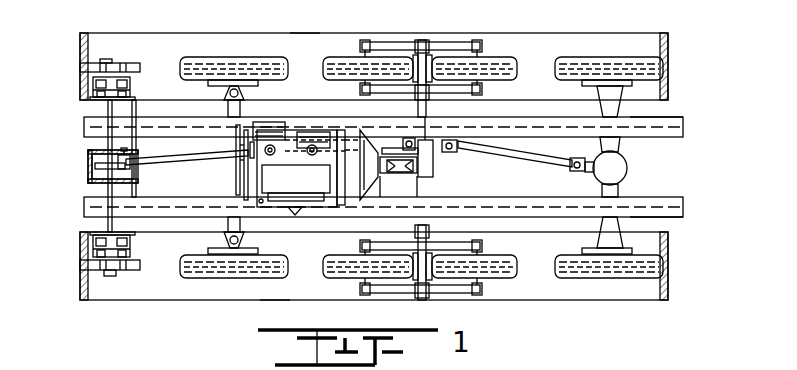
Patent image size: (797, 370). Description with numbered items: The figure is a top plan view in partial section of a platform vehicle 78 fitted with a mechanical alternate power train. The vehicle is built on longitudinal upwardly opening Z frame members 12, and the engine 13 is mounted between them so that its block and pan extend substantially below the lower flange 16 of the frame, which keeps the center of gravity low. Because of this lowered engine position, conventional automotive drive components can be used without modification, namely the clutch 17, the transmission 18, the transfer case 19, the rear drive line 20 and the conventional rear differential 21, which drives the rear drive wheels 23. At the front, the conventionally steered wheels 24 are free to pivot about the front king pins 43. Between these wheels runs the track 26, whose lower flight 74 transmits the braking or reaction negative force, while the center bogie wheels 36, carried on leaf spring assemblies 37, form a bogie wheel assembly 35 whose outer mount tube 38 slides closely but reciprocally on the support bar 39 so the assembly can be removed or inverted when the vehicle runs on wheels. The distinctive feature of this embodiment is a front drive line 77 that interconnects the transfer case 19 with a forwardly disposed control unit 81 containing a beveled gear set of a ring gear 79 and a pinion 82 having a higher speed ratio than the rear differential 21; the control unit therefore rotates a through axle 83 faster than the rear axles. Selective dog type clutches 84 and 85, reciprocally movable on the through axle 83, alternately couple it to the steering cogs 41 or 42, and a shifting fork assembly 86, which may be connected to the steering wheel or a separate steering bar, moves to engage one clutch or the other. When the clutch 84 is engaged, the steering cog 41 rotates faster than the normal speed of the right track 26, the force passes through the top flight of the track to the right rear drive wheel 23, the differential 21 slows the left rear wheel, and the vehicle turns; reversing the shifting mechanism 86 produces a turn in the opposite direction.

The Z frame members 12 is at (683, 125).
The engine 13 is at (305, 190).
The lower flange 16 is at (656, 137).
The clutch 17 is at (363, 165).
The transmission 18 is at (388, 176).
The transfer case 19 is at (434, 160).
The rear drive line 20 is at (516, 160).
The rear differential 21 is at (621, 177).
The rear drive wheels 23 is at (592, 57).
The front steered wheels 24 is at (201, 57).
The track 26 is at (317, 15).
The bogie wheel assembly 35 is at (416, 62).
The center bogie wheels 36 is at (328, 58).
The leaf spring assemblies 37 is at (456, 42).
The outer mount tube 38 is at (428, 15).
The support bar 39 is at (418, 224).
The steering cog 41 is at (80, 67).
The steering cog 42 is at (80, 265).
The front king pins 43 is at (250, 93).
The lower flight 74 is at (249, 15).
The front drive line 77 is at (190, 158).
The platform vehicle 78 is at (674, 47).
The ring gear 79 is at (102, 168).
The control unit 81 is at (84, 163).
The pinion 82 is at (130, 158).
The through axle 83 is at (110, 145).
The clutch 84 is at (93, 87).
The clutch 85 is at (93, 243).
The shifting fork assembly 86 is at (137, 178).